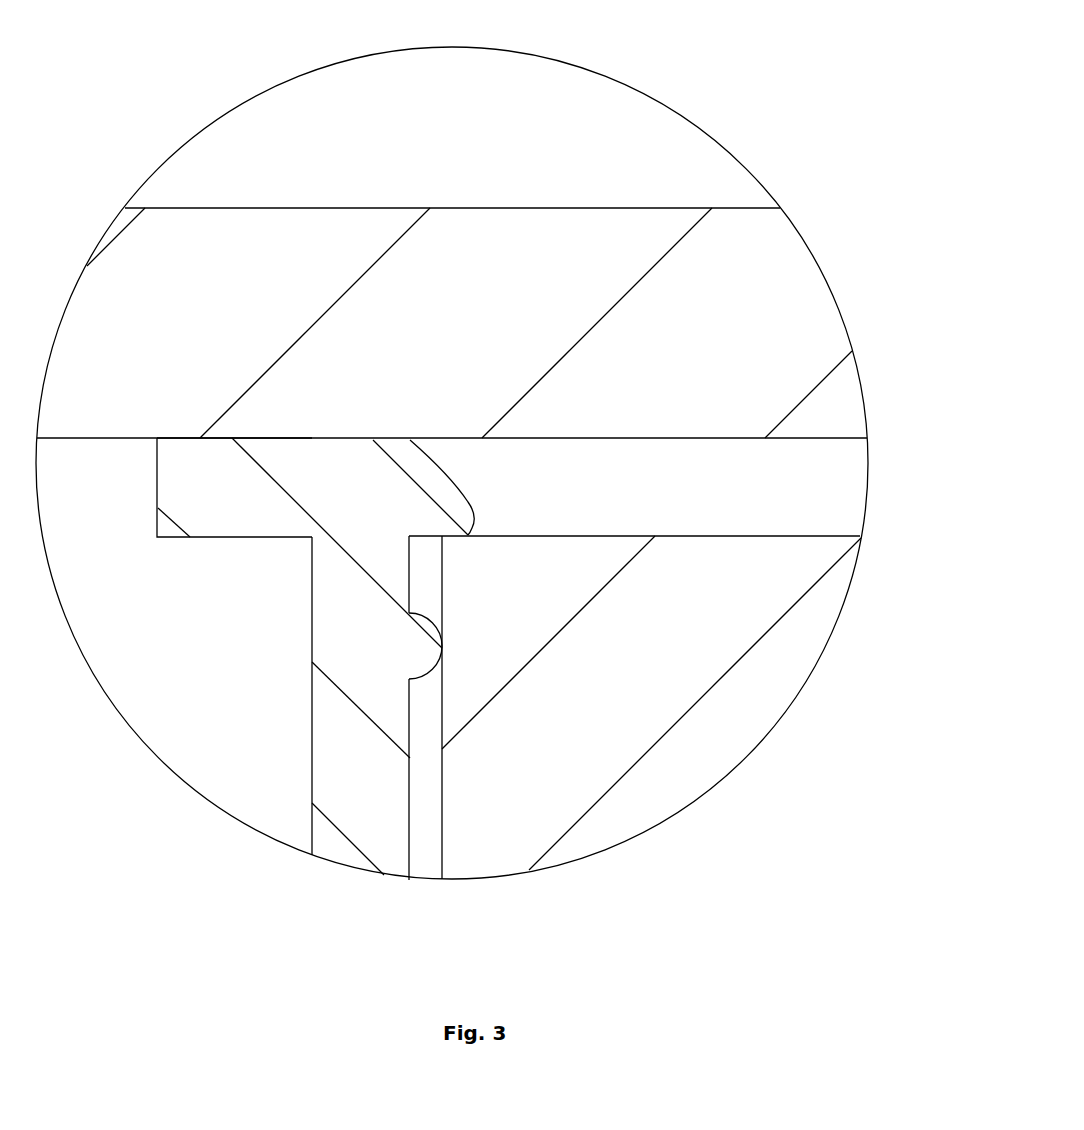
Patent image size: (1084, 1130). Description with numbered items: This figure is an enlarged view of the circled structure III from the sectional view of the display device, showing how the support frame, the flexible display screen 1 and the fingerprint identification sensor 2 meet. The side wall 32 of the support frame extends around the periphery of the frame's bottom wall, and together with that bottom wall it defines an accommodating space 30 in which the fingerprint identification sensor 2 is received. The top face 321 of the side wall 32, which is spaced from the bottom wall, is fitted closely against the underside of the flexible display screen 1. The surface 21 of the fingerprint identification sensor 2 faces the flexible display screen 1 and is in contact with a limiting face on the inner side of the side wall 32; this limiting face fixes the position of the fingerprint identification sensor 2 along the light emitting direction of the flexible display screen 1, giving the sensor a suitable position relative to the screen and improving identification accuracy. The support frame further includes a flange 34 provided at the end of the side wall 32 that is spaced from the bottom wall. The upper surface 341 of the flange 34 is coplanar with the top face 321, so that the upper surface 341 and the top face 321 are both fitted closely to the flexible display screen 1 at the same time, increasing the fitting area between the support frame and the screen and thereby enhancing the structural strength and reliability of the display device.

The structure III is at (670, 113).
The flexible display screen 1 is at (502, 275).
The fingerprint identification sensor 2 is at (690, 747).
The surface 21 is at (750, 535).
The accommodating space 30 is at (427, 835).
The side wall 32 is at (362, 782).
The top face 321 is at (362, 438).
The flange 34 is at (218, 502).
The upper surface 341 is at (210, 437).